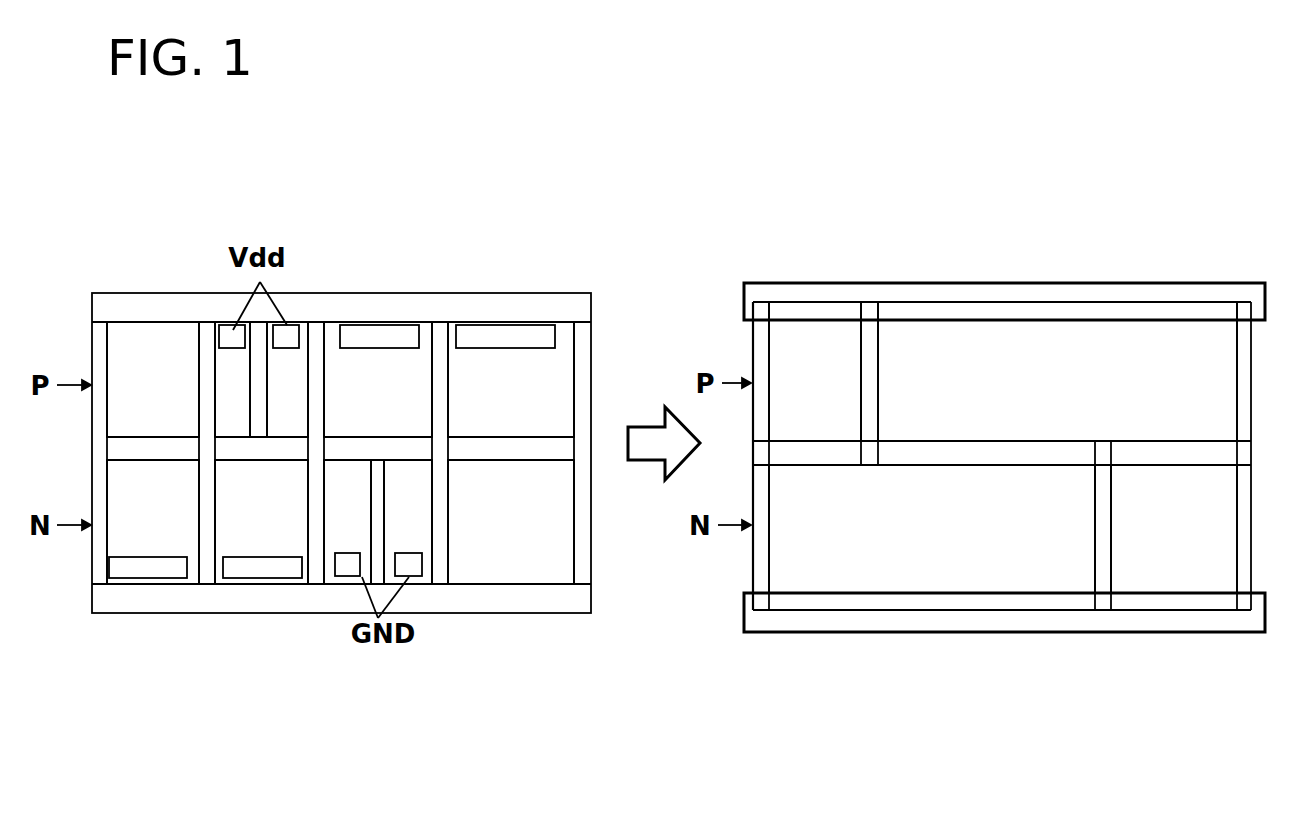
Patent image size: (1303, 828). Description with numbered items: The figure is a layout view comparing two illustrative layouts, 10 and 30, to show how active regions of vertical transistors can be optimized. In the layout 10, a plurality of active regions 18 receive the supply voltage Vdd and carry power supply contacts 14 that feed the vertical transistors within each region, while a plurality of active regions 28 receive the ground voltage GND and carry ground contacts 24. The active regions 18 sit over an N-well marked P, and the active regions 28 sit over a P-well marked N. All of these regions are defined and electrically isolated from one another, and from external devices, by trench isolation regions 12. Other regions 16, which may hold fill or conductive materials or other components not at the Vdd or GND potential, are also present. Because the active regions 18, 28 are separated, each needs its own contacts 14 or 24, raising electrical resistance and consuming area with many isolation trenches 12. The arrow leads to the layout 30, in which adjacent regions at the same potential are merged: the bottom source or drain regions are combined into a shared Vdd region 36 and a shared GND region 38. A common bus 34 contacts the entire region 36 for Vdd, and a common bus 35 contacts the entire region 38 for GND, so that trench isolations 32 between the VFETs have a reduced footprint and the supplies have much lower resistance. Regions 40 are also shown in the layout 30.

The layout 10 is at (396, 200).
The trench isolation regions 12 is at (262, 385).
The power supply contacts 14 is at (233, 330).
The other regions 16 is at (140, 405).
The active regions 18 is at (219, 405).
The ground contacts 24 is at (143, 563).
The active regions 28 is at (137, 505).
The layout 30 is at (978, 202).
The trench isolations 32 is at (760, 367).
The common bus 34 is at (1082, 283).
The common bus 35 is at (1001, 632).
The combined region 36 is at (942, 425).
The combined region 38 is at (1025, 567).
The transistor regions 40 is at (805, 392).